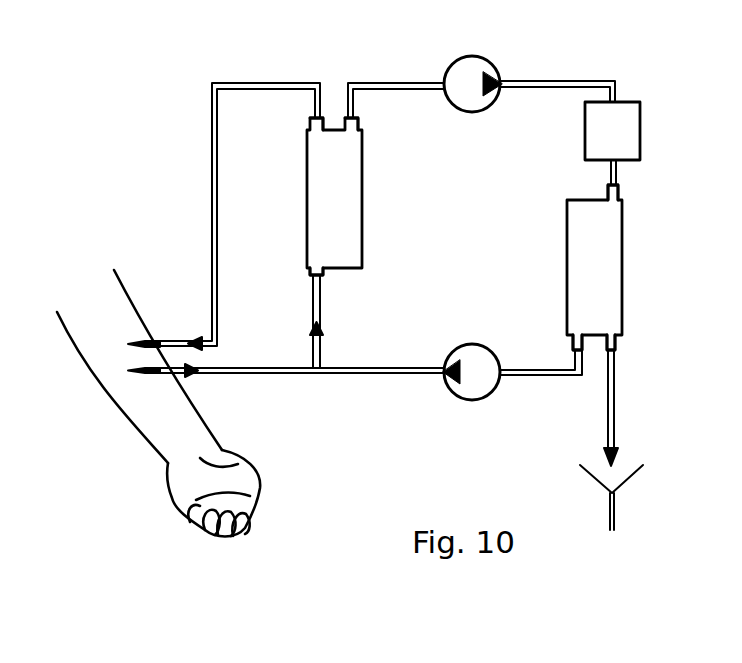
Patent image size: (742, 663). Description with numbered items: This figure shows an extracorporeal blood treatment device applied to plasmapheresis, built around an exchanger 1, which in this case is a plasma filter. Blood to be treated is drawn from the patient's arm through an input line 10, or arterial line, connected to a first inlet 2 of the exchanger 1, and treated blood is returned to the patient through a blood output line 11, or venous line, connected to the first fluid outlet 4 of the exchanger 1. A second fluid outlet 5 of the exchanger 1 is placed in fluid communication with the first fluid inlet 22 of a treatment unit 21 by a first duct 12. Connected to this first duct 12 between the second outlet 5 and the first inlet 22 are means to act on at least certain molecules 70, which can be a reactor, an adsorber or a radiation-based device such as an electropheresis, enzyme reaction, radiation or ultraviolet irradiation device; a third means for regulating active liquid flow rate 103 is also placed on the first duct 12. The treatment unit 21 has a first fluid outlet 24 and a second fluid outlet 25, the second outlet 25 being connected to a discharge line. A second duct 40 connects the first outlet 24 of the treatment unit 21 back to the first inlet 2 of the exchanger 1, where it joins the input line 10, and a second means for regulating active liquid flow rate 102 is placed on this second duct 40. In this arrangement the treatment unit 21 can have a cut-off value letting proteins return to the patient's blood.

The exchanger 1 is at (372, 196).
The first inlet 2 is at (306, 274).
The first fluid outlet 4 is at (308, 124).
The second fluid outlet 5 is at (356, 121).
The input line 10 is at (284, 376).
The blood output line 11 is at (210, 223).
The first duct 12 is at (521, 82).
The treatment unit 21 is at (557, 268).
The first fluid inlet 22 is at (620, 193).
The first fluid outlet 24 is at (572, 345).
The second fluid outlet 25 is at (618, 344).
The second duct 40 is at (337, 376).
The means to act on at least certain molecules 70 is at (640, 122).
The second means for regulating active liquid flow rate 102 is at (449, 383).
The third means for regulating active liquid flow rate 103 is at (447, 68).